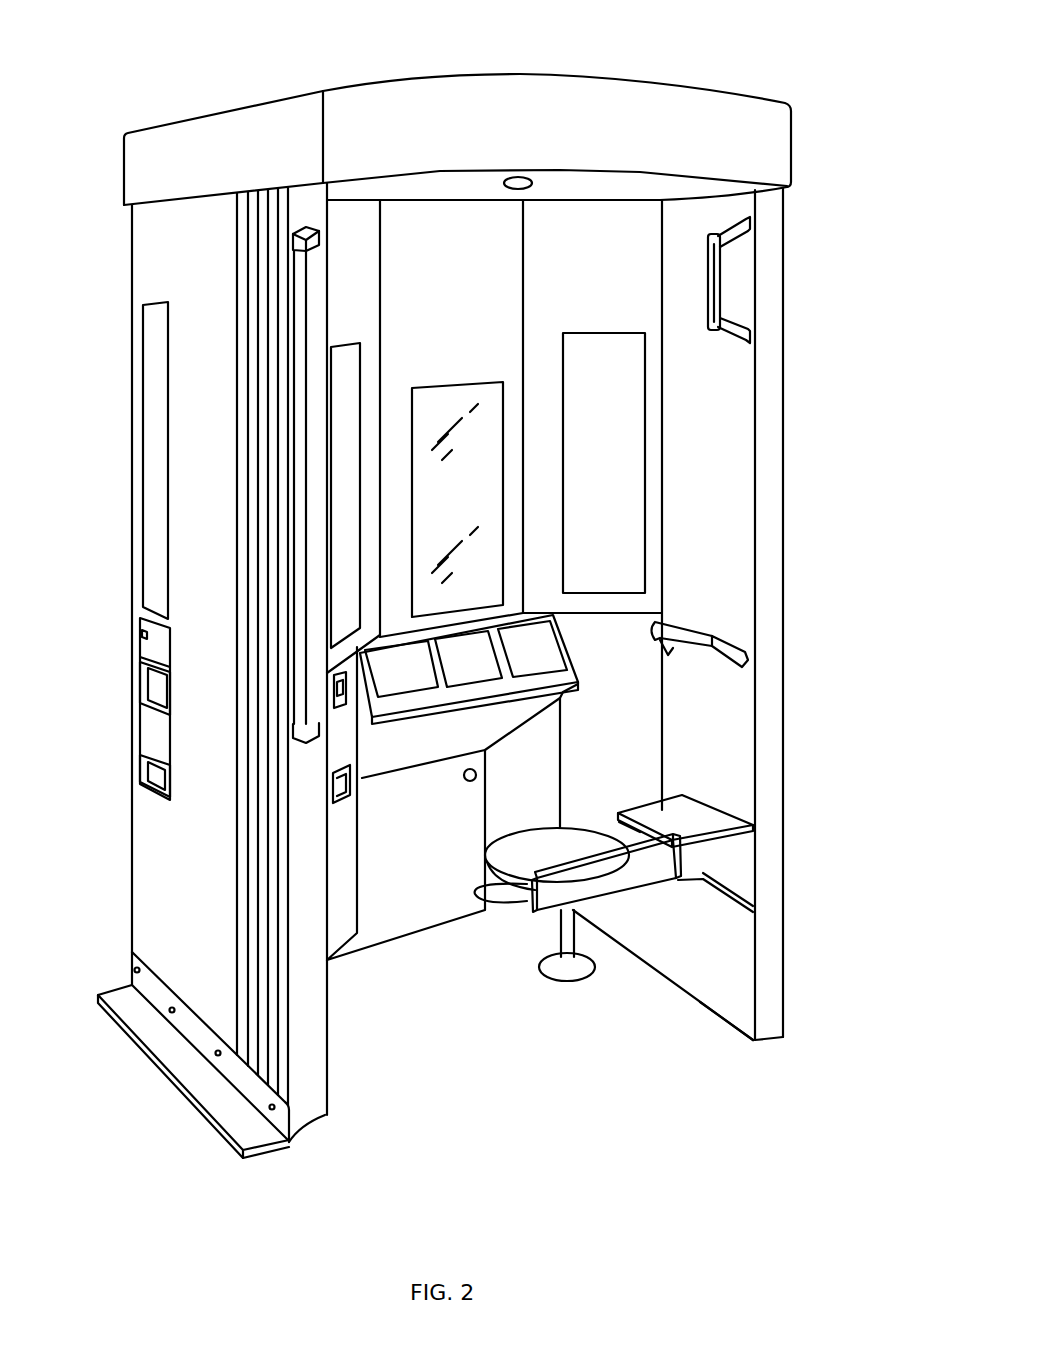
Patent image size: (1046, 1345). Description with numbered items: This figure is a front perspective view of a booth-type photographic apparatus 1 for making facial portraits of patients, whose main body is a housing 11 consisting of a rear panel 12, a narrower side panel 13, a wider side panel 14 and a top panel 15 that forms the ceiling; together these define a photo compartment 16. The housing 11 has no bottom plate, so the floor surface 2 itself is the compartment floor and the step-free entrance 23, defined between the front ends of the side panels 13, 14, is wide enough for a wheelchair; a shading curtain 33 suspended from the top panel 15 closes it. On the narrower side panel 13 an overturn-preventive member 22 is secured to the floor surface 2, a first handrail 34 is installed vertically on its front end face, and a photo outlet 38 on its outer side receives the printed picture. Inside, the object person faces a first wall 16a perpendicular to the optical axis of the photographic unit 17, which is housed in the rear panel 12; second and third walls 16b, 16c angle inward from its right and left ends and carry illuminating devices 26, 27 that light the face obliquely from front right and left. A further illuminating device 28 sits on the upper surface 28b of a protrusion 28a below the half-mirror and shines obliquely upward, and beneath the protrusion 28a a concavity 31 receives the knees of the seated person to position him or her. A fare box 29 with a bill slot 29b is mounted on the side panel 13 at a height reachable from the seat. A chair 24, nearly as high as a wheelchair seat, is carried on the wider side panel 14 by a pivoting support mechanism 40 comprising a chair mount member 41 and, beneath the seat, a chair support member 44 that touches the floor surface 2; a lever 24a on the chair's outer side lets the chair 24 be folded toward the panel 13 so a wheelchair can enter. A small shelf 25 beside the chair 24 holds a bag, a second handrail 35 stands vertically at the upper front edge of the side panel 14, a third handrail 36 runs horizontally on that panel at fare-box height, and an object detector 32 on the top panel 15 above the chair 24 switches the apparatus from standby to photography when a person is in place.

The photographic apparatus 1 is at (668, 77).
The floor surface 2 is at (627, 1065).
The housing 11 is at (262, 120).
The rear panel 12 is at (133, 284).
The side panel 13 is at (158, 858).
The side panel 14 is at (775, 360).
The top panel 15 is at (417, 95).
The photo compartment 16 is at (586, 259).
The first wall 16a is at (460, 215).
The second wall 16b is at (585, 215).
The third wall 16c is at (350, 230).
The photographic unit 17 is at (452, 390).
The overturn-preventive member 22 is at (176, 1058).
The entrance 23 is at (735, 580).
The chair 24 is at (590, 890).
The lever 24a is at (500, 916).
The small shelf 25 is at (745, 815).
The illuminating device 26 is at (598, 346).
The illuminating device 27 is at (343, 356).
The illuminating device 28 is at (478, 670).
The protrusion 28a is at (566, 697).
The upper surface 28b is at (403, 705).
The fare box 29 is at (338, 706).
The bill slot 29b is at (360, 592).
The concavity 31 is at (386, 910).
The object detector 32 is at (512, 190).
The shading curtain 33 is at (297, 1088).
The first handrail 34 is at (298, 612).
The second handrail 35 is at (724, 280).
The third handrail 36 is at (700, 660).
The photo outlet 38 is at (156, 687).
The pivoting support mechanism 40 is at (683, 890).
The chair mount member 41 is at (625, 831).
The chair support member 44 is at (562, 976).